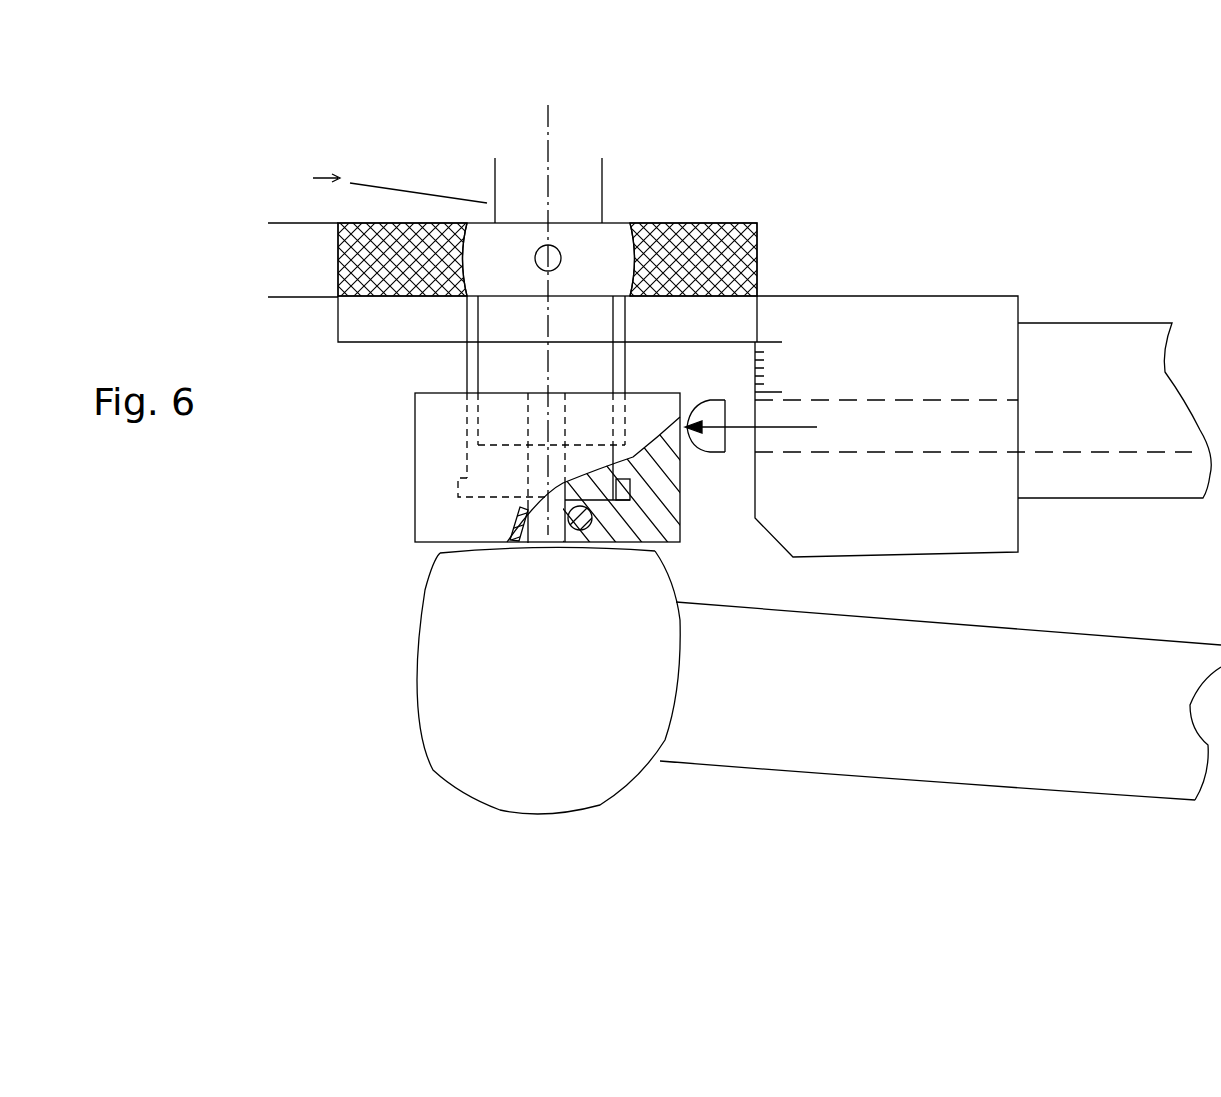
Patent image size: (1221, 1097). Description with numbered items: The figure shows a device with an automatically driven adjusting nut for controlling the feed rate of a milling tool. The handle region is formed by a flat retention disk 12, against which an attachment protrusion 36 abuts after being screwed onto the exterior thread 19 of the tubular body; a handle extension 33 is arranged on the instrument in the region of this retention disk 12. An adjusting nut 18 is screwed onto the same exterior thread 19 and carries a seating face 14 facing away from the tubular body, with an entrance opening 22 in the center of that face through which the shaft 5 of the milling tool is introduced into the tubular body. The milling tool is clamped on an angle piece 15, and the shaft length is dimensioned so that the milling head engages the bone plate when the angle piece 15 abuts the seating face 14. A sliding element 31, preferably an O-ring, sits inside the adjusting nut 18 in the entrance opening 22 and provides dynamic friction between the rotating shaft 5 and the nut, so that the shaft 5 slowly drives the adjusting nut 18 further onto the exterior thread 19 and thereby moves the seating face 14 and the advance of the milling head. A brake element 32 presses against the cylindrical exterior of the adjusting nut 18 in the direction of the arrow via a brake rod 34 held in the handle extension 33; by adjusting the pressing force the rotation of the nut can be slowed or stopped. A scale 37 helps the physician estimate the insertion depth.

The shaft 5 is at (520, 532).
The retention disk 12 is at (336, 252).
The seating face 14 is at (427, 548).
The angle piece 15 is at (470, 690).
The adjusting nut 18 is at (425, 455).
The exterior thread 19 is at (626, 372).
The entrance opening 22 is at (565, 543).
The sliding element 31 is at (520, 540).
The brake element 32 is at (712, 443).
The handle extension 33 is at (888, 333).
The brake rod 34 is at (1078, 452).
The attachment protrusion 36 is at (381, 325).
The scale 37 is at (770, 338).